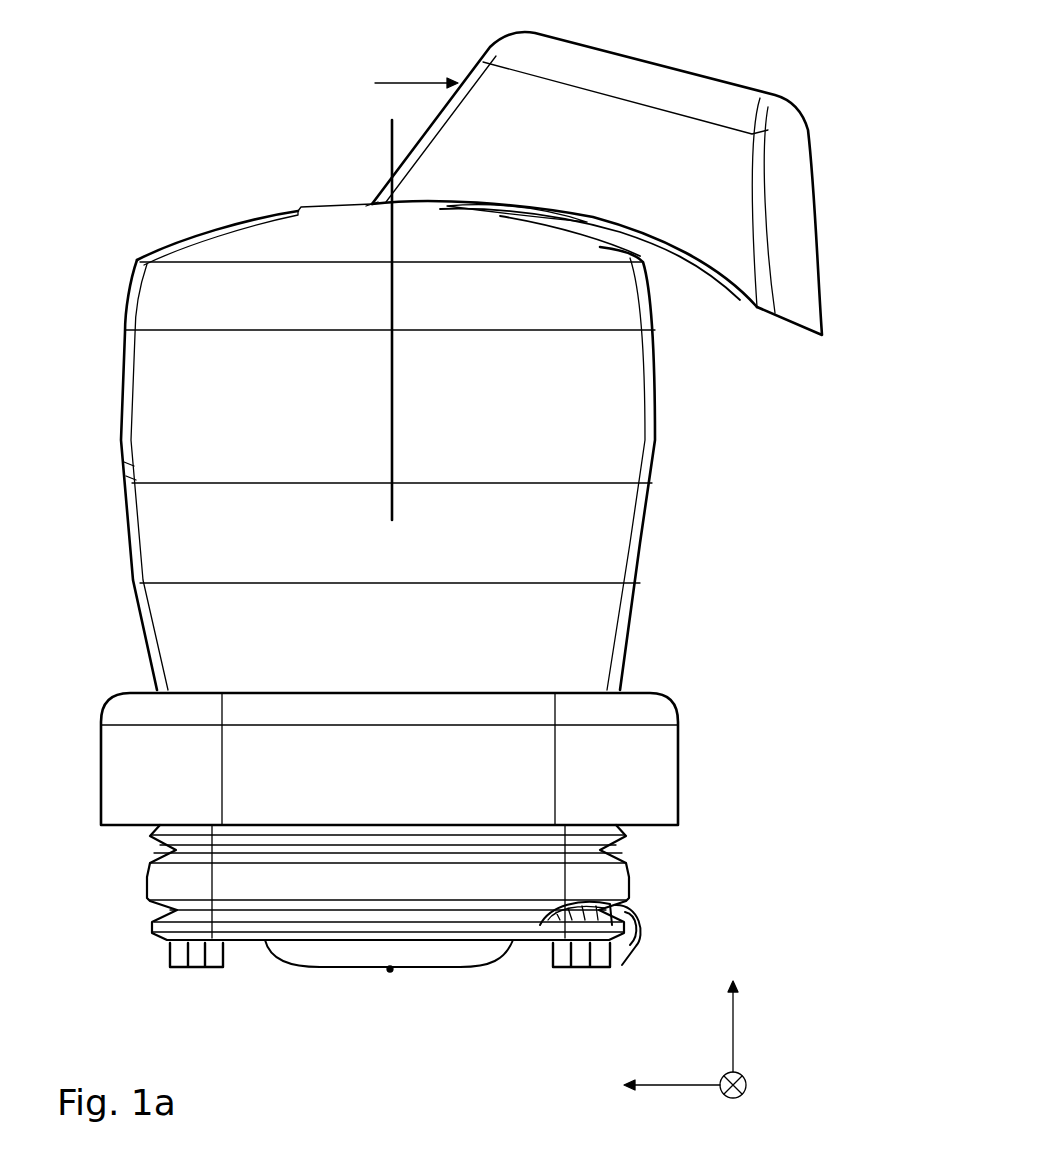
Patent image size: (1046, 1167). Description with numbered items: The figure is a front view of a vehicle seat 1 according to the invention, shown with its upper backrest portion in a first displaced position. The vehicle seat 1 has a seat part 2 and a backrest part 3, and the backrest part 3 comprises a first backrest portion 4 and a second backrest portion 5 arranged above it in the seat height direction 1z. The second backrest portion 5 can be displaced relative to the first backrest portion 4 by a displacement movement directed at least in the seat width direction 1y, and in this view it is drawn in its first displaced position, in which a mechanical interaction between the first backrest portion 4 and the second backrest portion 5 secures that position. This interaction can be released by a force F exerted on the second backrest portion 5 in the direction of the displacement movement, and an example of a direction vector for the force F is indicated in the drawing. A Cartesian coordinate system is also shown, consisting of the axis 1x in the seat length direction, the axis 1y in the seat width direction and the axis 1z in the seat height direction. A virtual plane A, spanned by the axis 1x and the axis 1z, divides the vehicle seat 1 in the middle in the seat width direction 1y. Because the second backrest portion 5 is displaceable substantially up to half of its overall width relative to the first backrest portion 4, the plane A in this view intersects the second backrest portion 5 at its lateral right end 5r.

The vehicle seat 1 is at (72, 184).
The seat part 2 is at (60, 778).
The backrest part 3 is at (64, 483).
The first backrest portion 4 is at (657, 540).
The second backrest portion 5 is at (838, 233).
The lateral right end of the second backrest portion 5r is at (368, 194).
The virtual plane A is at (404, 416).
The force F is at (400, 83).
The axis 1x is at (733, 1100).
The axis 1y is at (673, 1087).
The axis 1z is at (734, 1038).